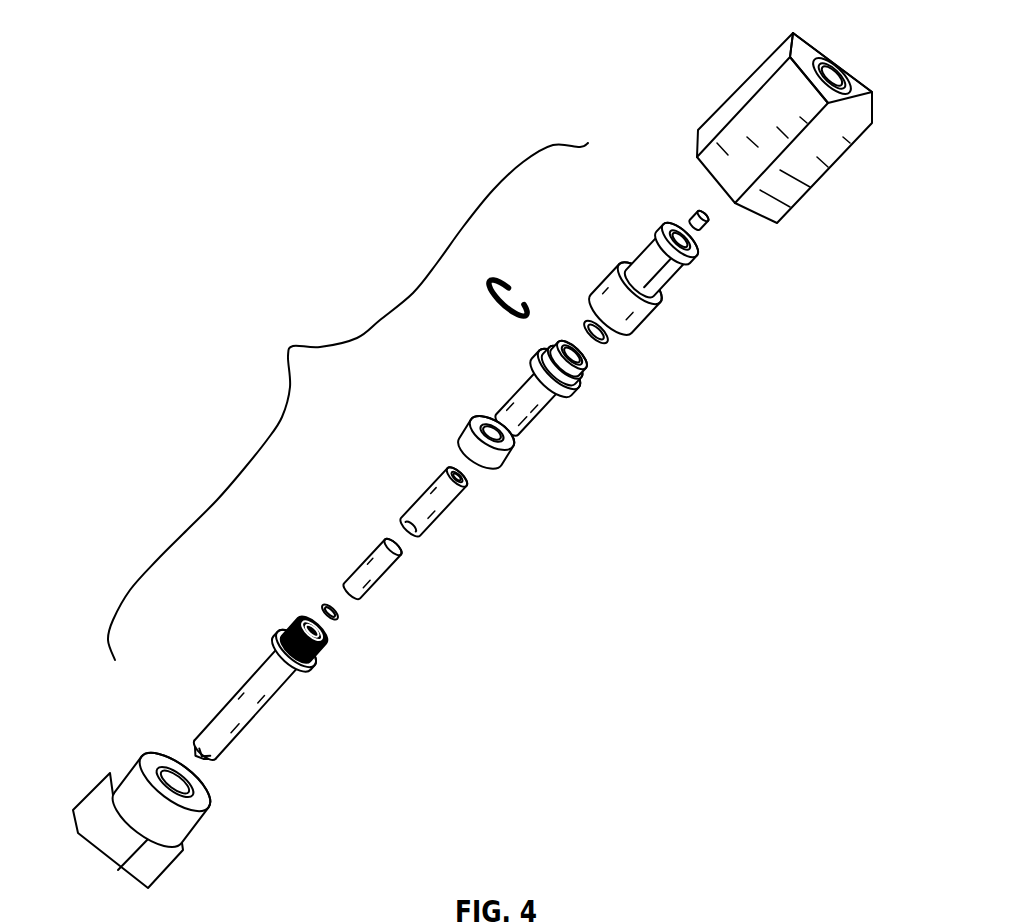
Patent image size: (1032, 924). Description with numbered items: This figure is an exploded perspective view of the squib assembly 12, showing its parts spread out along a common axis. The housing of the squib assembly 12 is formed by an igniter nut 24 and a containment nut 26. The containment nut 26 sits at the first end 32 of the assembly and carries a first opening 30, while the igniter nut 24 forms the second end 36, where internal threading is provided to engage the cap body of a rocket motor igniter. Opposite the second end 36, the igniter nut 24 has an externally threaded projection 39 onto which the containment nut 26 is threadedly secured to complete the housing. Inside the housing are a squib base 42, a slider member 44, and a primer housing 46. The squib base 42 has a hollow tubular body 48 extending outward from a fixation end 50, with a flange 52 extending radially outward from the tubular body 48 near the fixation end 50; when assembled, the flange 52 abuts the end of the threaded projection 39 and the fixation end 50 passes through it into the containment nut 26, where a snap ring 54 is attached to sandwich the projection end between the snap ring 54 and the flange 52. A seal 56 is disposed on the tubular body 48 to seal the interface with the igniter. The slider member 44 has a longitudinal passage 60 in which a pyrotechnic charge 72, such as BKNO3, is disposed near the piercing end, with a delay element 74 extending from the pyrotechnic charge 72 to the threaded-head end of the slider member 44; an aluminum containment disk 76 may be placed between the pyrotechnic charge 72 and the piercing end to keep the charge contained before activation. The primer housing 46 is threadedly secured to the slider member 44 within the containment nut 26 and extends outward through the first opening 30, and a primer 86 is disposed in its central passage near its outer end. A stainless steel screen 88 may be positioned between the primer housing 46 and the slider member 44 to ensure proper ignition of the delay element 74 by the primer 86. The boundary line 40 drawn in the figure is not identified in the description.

The squib assembly 12 is at (163, 115).
The igniter nut 24 is at (144, 823).
The containment nut 26 is at (806, 117).
The first opening 30 is at (843, 80).
The first end 32 is at (800, 47).
The second end 36 is at (95, 858).
The externally threaded projection 39 is at (195, 822).
The housing boundary 40 is at (288, 347).
The squib base 42 is at (537, 421).
The slider member 44 is at (289, 693).
The primer housing 46 is at (657, 312).
The hollow tubular body 48 is at (567, 404).
The fixation end 50 is at (588, 374).
The flange 52 is at (581, 391).
The snap ring 54 is at (517, 283).
The seal 56 is at (503, 464).
The longitudinal passage 60 is at (327, 637).
The pyrotechnic charge 72 is at (383, 578).
The delay element 74 is at (447, 514).
The containment disk 76 is at (325, 606).
The primer 86 is at (710, 224).
The screen 88 is at (607, 344).